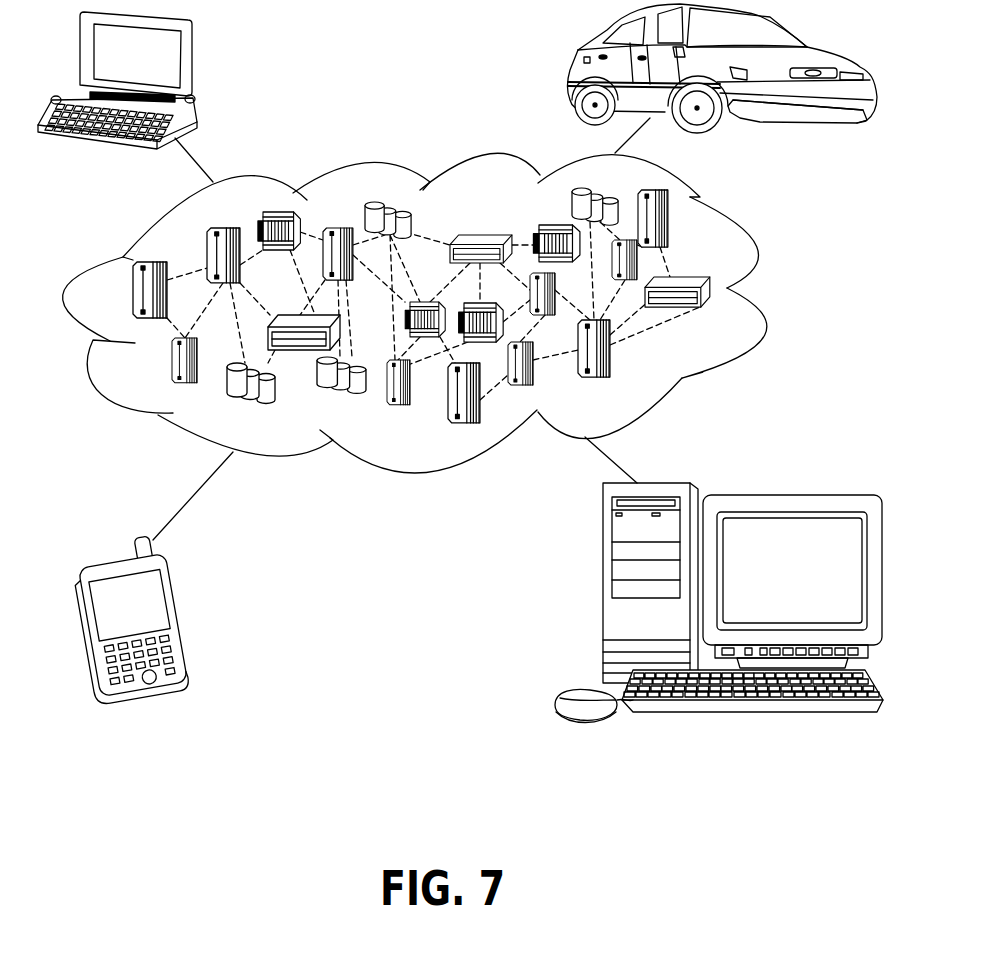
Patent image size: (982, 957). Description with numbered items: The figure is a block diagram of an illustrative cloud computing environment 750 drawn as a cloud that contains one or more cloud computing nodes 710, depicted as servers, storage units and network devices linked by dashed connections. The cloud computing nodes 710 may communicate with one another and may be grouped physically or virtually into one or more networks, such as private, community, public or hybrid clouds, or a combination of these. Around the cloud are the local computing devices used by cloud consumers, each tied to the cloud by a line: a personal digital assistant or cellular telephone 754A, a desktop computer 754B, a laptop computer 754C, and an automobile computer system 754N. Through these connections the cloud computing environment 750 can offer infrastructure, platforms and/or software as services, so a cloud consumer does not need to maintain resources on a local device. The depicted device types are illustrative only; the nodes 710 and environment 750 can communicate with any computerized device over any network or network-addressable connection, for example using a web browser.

The cloud computing nodes 710 is at (741, 313).
The cloud computing environment 750 is at (757, 250).
The personal digital assistant (PDA) or cellular telephone 754A is at (185, 612).
The desktop computer 754B is at (603, 592).
The laptop computer 754C is at (192, 58).
The automobile computer system 754N is at (578, 62).